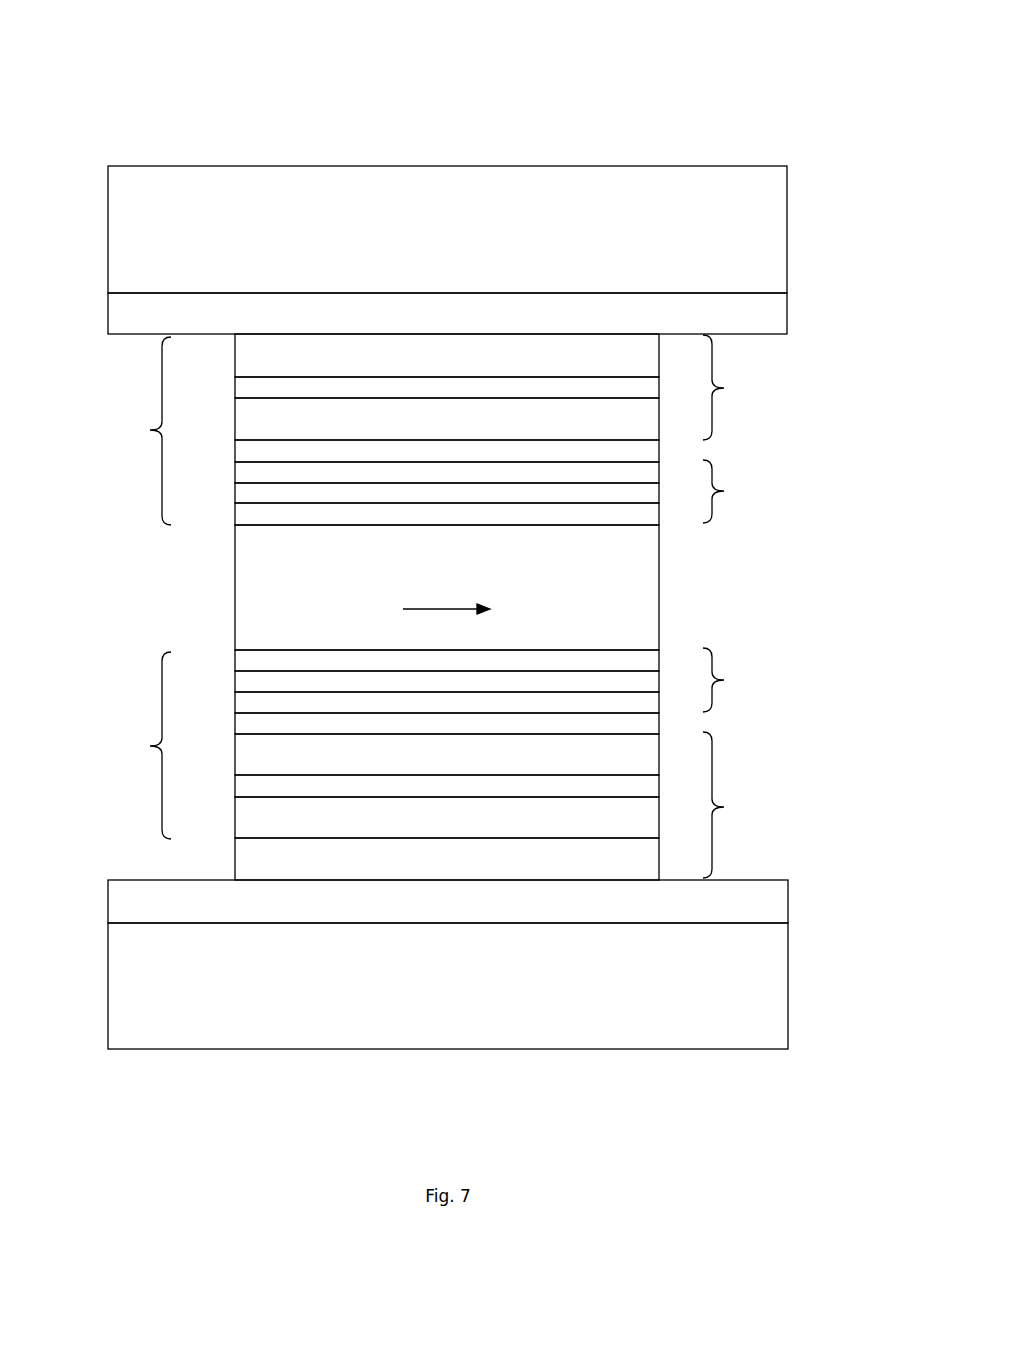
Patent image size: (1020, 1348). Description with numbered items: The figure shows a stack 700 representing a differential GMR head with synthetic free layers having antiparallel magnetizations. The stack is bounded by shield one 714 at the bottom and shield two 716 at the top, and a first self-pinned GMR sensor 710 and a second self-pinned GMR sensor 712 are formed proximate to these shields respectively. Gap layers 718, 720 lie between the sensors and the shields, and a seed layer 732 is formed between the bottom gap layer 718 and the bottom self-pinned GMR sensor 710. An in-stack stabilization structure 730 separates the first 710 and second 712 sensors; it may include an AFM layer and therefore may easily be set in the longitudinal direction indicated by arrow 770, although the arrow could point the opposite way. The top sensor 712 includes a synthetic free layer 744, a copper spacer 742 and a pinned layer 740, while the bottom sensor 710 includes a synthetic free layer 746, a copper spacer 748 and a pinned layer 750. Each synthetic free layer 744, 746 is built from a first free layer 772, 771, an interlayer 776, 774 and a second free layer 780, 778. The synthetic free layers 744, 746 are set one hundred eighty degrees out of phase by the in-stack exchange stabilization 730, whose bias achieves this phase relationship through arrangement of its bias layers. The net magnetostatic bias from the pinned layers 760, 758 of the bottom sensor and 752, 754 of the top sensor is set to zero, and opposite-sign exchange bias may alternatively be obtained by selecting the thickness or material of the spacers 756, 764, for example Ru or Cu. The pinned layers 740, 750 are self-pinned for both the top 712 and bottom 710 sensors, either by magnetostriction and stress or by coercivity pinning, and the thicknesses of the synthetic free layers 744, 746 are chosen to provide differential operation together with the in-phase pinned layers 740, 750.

The stack 700 is at (165, 78).
The shield two 716 is at (787, 228).
The gap layer 720 is at (787, 312).
The gap layer 718 is at (788, 892).
The shield one 714 is at (788, 963).
The second self-pinned GMR sensor 712 is at (87, 442).
The first self-pinned GMR sensor 710 is at (77, 757).
The pinned layer 740 is at (807, 397).
The copper spacer 742 is at (659, 450).
The synthetic free layer 744 is at (797, 512).
The synthetic free layer 746 is at (842, 680).
The copper spacer 748 is at (659, 722).
The pinned layer 750 is at (818, 827).
The in-stack stabilization structure 730 is at (659, 568).
The seed layer 732 is at (235, 870).
The arrow 770 is at (435, 610).
The pinned layer 752 is at (447, 355).
The spacer 756 is at (447, 387).
The pinned layer 754 is at (447, 419).
The first free layer 772 is at (447, 472).
The interlayer 776 is at (447, 493).
The second free layer 780 is at (447, 514).
The second free layer 778 is at (447, 660).
The interlayer 774 is at (447, 681).
The first free layer 771 is at (447, 702).
The pinned layer 758 is at (447, 754).
The spacer 764 is at (447, 786).
The pinned layer 760 is at (447, 817).